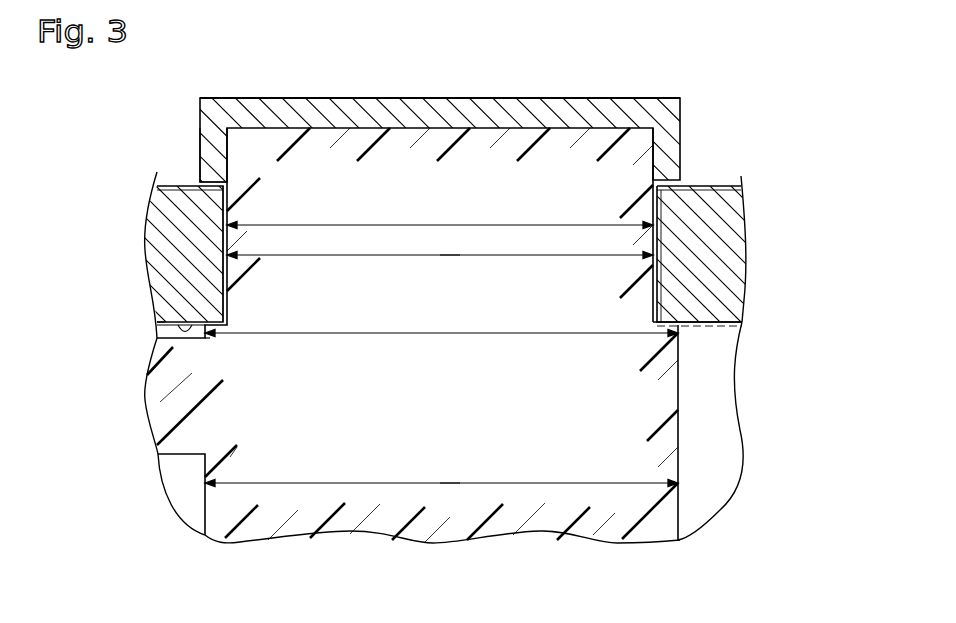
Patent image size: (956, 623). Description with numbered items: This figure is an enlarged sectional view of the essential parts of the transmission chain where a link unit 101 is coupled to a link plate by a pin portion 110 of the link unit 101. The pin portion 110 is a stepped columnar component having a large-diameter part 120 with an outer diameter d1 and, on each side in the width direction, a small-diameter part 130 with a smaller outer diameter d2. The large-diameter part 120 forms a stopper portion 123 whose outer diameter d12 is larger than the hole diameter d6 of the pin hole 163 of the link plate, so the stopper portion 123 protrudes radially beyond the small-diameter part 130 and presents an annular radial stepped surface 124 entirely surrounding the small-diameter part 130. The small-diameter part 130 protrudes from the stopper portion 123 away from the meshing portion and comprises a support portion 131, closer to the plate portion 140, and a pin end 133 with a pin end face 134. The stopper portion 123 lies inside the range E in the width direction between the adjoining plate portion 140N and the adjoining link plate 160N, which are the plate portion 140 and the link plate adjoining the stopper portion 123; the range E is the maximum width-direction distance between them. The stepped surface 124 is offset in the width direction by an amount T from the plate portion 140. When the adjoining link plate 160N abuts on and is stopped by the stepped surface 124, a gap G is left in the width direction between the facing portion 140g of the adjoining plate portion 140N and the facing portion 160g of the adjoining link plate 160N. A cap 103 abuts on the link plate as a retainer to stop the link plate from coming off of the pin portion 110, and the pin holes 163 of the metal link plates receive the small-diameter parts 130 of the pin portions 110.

The link unit 101 is at (78, 470).
The cap 103 is at (640, 106).
The pin portion 110 is at (205, 506).
The large-diameter part 120 is at (610, 540).
The stopper portion 123 is at (226, 316).
The stepped surface 124 is at (668, 300).
The small-diameter part 130 is at (430, 50).
The support portion 131 is at (548, 190).
The pin end 133 is at (446, 142).
The pin end face 134 is at (342, 110).
The plate portion 140 is at (156, 435).
The adjoining plate portion 140N is at (182, 456).
The facing portion of the adjoining plate portion 140g is at (160, 340).
The adjoining link plate 160N is at (722, 339).
The facing portion of the adjoining link plate 160g is at (173, 317).
The pin hole 163 is at (230, 197).
The range in the width direction E is at (158, 319).
The offset amount T is at (114, 326).
The gap G is at (190, 341).
The hole diameter d6 is at (446, 224).
The outer diameter of the small-diameter part d2 is at (460, 256).
The outer diameter of the stopper portion d12 is at (446, 334).
The outer diameter of the large-diameter part d1 is at (468, 484).